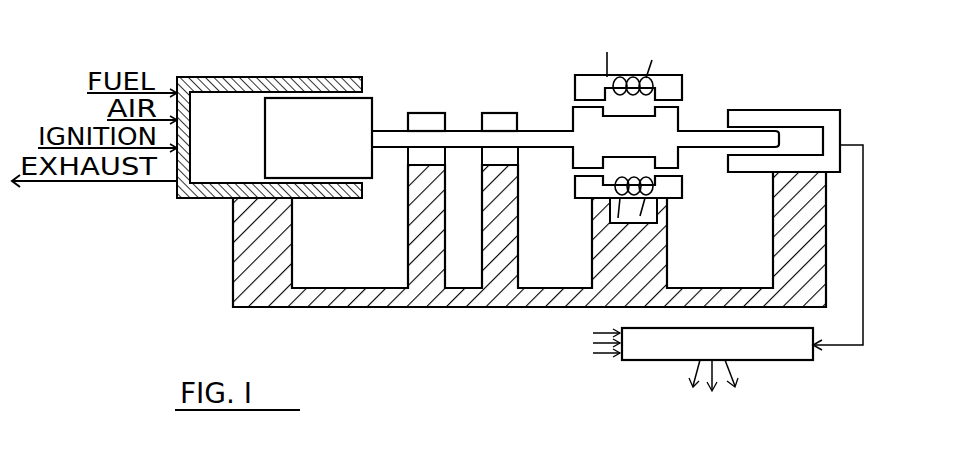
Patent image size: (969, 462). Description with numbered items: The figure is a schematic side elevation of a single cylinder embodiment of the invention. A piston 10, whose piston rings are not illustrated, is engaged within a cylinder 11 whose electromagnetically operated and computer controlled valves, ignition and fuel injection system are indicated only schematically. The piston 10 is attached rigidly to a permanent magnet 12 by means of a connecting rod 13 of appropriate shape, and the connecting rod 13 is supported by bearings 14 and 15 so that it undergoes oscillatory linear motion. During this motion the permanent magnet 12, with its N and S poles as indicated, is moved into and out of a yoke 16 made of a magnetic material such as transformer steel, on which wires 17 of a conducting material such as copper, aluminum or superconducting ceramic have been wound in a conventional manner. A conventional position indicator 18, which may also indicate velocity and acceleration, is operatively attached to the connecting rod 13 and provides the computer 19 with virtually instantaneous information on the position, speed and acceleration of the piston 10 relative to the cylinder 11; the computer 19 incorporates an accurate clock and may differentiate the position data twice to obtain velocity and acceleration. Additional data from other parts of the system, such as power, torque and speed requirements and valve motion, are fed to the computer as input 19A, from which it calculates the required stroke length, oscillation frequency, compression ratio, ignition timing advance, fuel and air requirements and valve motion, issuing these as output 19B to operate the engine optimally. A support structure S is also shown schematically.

The piston 10 is at (331, 154).
The cylinder 11 is at (529, 236).
The permanent magnet 12 is at (641, 148).
The connecting rod 13 is at (455, 150).
The bearing 14 is at (415, 122).
The bearing 15 is at (505, 122).
The yoke 16 is at (672, 184).
The wires 17 is at (607, 60).
The position indicator 18 is at (838, 163).
The computer 19 is at (792, 348).
The computer input 19A is at (585, 345).
The computer output 19B is at (689, 392).
The support structure S is at (515, 308).